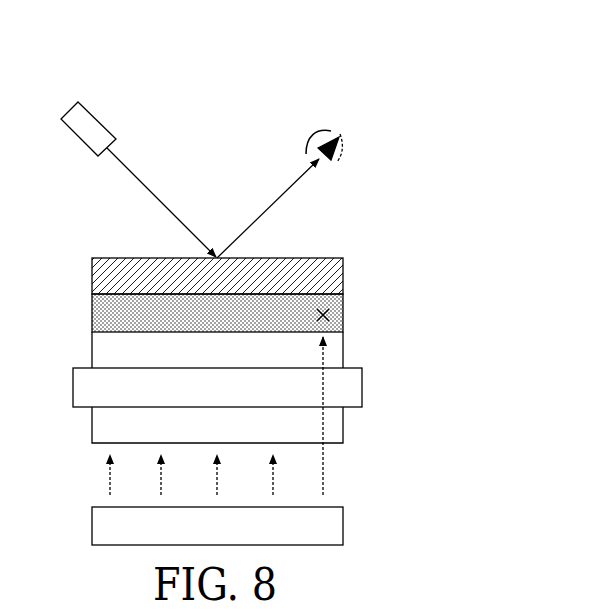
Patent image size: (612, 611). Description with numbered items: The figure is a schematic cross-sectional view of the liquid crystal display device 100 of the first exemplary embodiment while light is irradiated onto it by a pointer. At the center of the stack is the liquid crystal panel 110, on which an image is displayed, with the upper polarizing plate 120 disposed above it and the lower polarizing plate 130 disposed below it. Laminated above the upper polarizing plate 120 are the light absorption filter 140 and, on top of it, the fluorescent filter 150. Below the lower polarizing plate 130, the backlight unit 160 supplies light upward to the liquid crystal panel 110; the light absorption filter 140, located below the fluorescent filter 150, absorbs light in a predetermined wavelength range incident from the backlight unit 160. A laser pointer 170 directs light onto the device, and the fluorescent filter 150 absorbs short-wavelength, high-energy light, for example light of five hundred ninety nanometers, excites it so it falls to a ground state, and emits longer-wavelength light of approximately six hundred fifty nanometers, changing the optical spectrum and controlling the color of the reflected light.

The liquid crystal display device 100 is at (360, 235).
The liquid crystal panel 110 is at (362, 387).
The upper polarizing plate 120 is at (343, 350).
The lower polarizing plate 130 is at (343, 424).
The light absorption filter 140 is at (340, 313).
The fluorescent filter 150 is at (343, 275).
The backlight unit 160 is at (338, 525).
The laser pointer 170 is at (95, 123).